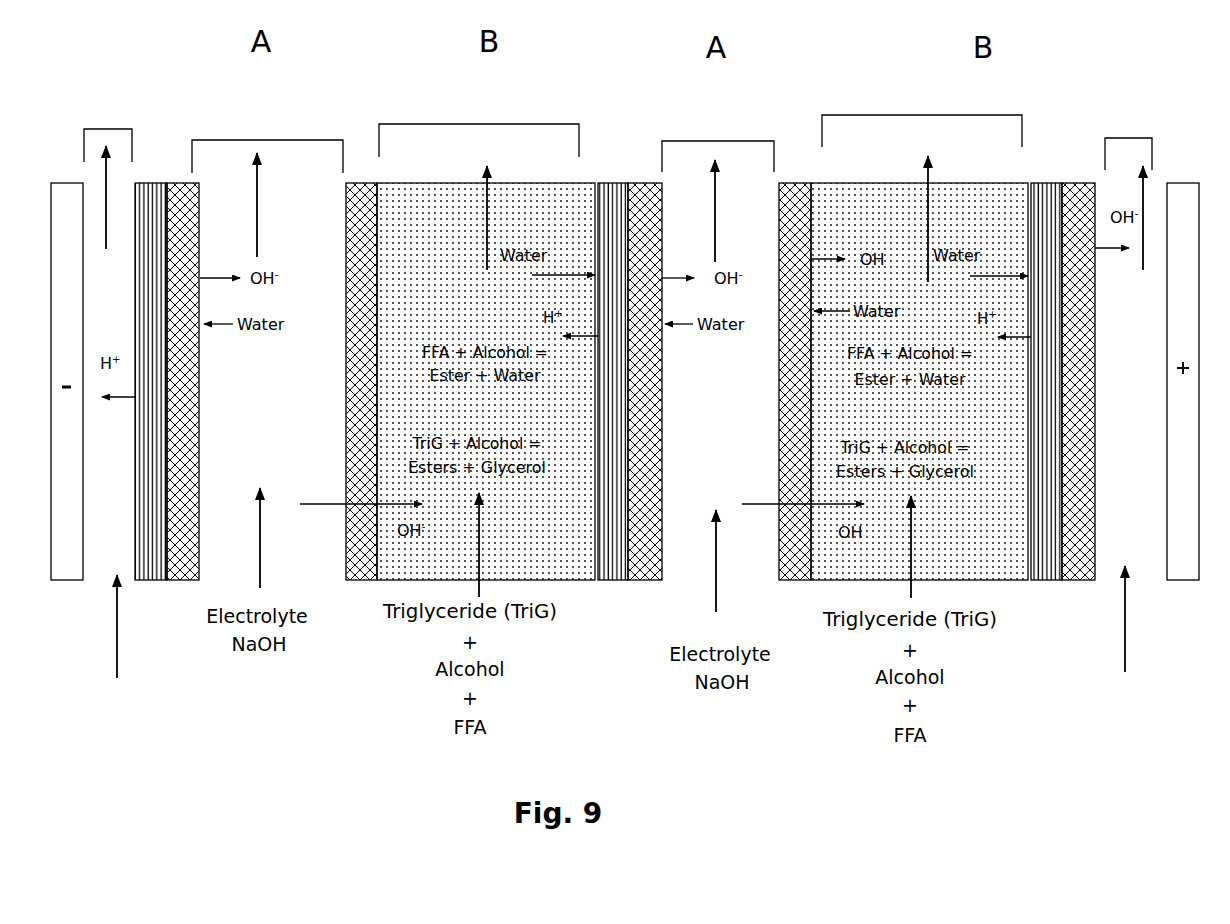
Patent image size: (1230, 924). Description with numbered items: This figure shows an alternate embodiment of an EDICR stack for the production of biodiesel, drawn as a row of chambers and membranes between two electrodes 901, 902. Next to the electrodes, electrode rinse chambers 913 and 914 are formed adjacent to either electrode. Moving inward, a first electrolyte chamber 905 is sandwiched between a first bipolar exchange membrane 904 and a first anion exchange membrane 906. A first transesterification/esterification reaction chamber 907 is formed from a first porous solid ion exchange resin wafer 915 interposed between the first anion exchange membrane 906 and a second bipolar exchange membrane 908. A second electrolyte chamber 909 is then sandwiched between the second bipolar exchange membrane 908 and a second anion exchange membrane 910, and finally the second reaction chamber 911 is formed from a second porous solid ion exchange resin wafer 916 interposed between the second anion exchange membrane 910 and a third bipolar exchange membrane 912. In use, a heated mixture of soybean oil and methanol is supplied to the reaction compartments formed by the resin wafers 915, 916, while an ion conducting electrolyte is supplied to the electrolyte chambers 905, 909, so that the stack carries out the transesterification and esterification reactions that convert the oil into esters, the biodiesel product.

The cathode electrode 901 is at (63, 178).
The anode electrode 902 is at (1188, 182).
The first bipolar exchange membrane 904 is at (156, 182).
The first electrolyte chamber 905 is at (257, 139).
The first anion exchange membrane 906 is at (355, 185).
The first transesterification/esterification reaction chamber 907 is at (477, 123).
The second bipolar exchange membrane 908 is at (628, 182).
The second electrolyte chamber 909 is at (717, 140).
The second anion exchange membrane 910 is at (795, 185).
The second reaction chamber 911 is at (920, 114).
The third bipolar exchange membrane 912 is at (1069, 182).
The electrode rinse chamber 913 is at (103, 128).
The electrode rinse chamber 914 is at (1127, 137).
The first porous solid ion exchange resin wafer 915 is at (547, 525).
The second porous solid ion exchange resin wafer 916 is at (995, 537).